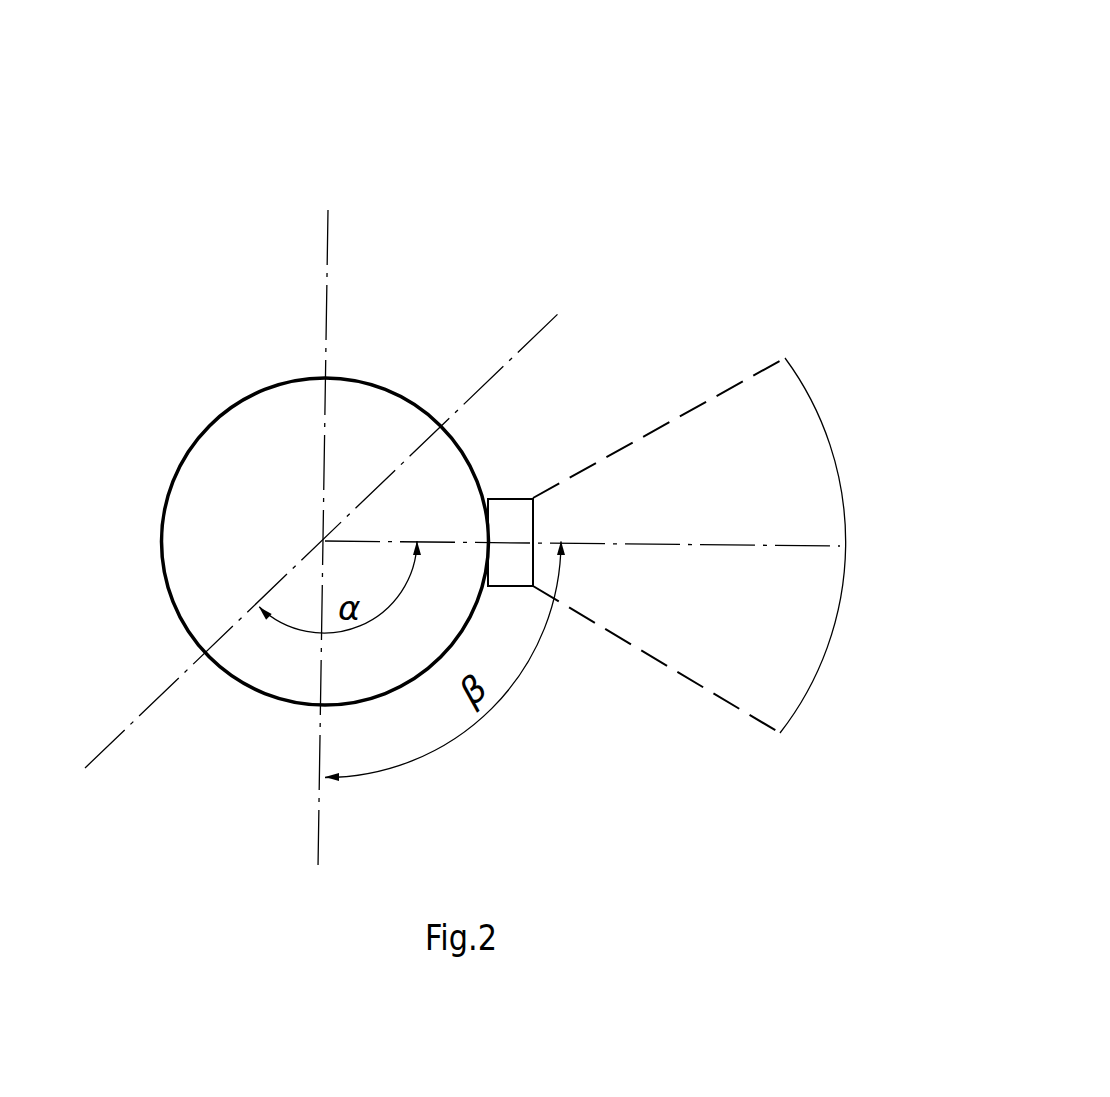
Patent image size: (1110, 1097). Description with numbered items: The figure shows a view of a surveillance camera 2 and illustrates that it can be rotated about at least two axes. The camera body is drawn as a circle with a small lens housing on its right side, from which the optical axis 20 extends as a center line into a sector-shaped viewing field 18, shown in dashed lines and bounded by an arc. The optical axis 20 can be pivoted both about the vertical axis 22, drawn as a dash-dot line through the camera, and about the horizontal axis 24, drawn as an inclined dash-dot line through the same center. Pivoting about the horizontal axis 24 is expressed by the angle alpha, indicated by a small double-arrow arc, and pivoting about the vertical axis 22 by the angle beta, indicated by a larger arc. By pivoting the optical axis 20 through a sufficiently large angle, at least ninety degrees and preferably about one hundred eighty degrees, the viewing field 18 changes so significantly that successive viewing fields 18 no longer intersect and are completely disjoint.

The surveillance camera 2 is at (680, 116).
The viewing field 18 is at (817, 417).
The optical axis 20 is at (727, 542).
The vertical axis 22 is at (329, 245).
The horizontal axis 24 is at (112, 742).